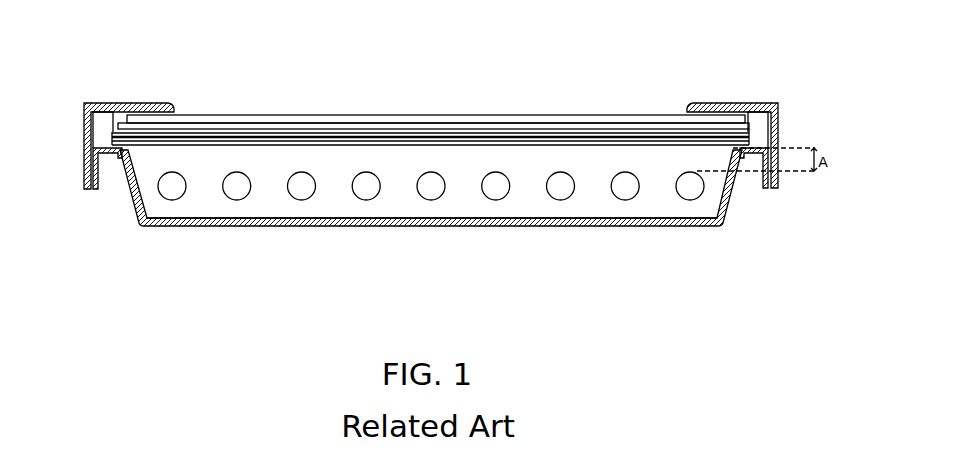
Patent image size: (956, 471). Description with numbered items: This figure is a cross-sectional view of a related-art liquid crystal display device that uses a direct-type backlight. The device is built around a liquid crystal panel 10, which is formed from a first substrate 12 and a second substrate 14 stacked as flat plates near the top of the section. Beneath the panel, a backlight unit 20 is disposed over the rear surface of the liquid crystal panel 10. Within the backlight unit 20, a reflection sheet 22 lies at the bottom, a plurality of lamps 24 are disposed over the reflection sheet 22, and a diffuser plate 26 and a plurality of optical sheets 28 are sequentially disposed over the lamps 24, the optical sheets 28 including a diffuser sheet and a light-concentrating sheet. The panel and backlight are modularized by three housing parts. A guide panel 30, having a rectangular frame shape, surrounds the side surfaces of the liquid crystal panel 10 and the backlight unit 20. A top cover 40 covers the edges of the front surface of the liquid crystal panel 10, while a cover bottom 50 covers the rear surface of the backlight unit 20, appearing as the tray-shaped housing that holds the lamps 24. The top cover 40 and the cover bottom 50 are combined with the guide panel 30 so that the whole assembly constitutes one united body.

The liquid crystal panel 10 is at (433, 73).
The first substrate 12 is at (382, 127).
The second substrate 14 is at (318, 117).
The backlight unit 20 is at (430, 231).
The reflection sheet 22 is at (652, 282).
The lamps 24 is at (433, 188).
The diffuser plate 26 is at (578, 145).
The optical sheets 28 is at (645, 137).
The guide panel 30 is at (98, 132).
The top cover 40 is at (152, 103).
The cover bottom 50 is at (193, 227).